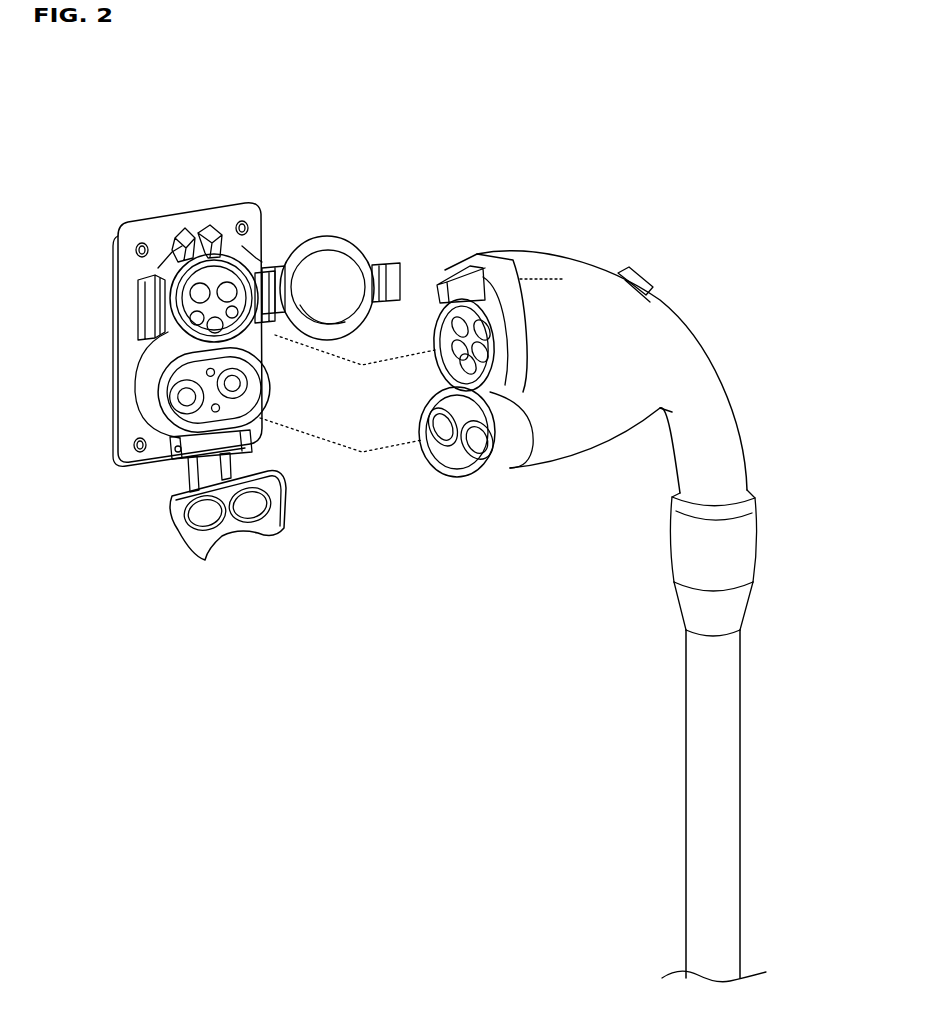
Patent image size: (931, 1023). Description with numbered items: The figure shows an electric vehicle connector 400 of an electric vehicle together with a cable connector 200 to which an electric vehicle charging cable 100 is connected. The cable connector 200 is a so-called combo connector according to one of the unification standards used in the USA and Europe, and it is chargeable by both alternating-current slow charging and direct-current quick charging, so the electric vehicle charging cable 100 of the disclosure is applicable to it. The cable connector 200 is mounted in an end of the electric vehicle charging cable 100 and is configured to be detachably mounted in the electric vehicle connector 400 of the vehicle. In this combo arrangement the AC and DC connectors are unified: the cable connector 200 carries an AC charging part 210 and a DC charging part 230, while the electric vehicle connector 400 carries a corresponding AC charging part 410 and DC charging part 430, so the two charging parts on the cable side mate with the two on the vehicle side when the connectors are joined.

The electric vehicle charging cable 100 is at (742, 798).
The cable connector 200 is at (571, 252).
The AC charging part 210 is at (433, 317).
The DC charging part 230 is at (433, 470).
The electric vehicle connector 400 is at (292, 203).
The AC charging part 410 is at (249, 252).
The DC charging part 430 is at (262, 420).